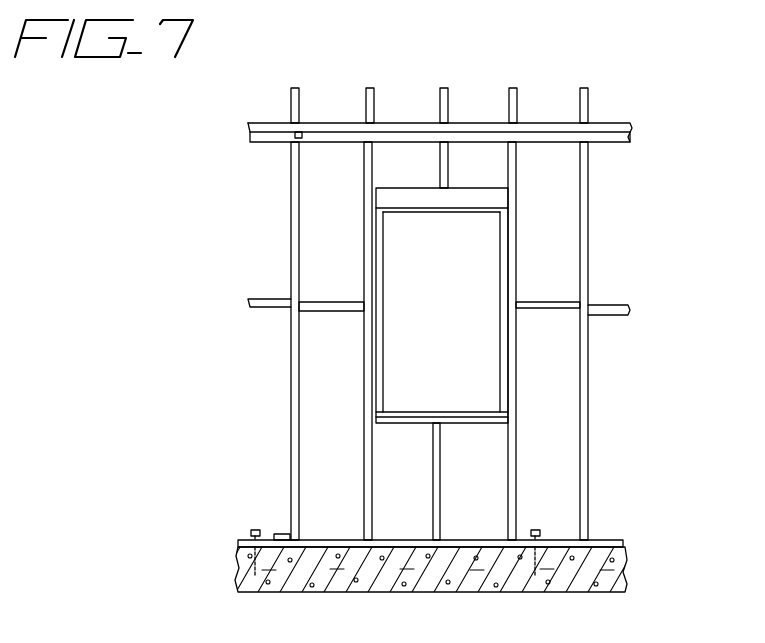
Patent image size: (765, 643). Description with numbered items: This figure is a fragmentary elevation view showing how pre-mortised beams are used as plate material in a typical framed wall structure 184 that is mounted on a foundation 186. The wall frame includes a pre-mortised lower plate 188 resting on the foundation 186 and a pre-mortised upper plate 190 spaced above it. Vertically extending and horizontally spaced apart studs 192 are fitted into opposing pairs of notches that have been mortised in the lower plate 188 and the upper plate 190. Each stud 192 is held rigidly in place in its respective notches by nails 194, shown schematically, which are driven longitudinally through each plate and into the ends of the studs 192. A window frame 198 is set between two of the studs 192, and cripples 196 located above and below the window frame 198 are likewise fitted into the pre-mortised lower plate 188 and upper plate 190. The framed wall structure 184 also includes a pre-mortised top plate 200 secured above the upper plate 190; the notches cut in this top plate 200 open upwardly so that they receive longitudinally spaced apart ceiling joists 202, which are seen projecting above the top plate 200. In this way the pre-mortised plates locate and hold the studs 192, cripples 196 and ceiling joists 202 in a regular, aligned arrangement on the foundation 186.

The framed wall structure 184 is at (480, 318).
The foundation 186 is at (630, 580).
The pre-mortised lower plate 188 is at (318, 539).
The pre-mortised upper plate 190 is at (275, 137).
The studs 192 is at (300, 258).
The nails 194 is at (302, 134).
The cripples 196 is at (448, 168).
The window frame 198 is at (512, 255).
The pre-mortised top plate 200 is at (398, 126).
The ceiling joists 202 is at (303, 102).